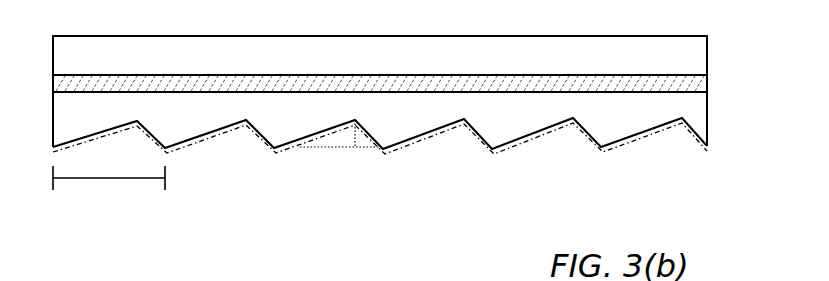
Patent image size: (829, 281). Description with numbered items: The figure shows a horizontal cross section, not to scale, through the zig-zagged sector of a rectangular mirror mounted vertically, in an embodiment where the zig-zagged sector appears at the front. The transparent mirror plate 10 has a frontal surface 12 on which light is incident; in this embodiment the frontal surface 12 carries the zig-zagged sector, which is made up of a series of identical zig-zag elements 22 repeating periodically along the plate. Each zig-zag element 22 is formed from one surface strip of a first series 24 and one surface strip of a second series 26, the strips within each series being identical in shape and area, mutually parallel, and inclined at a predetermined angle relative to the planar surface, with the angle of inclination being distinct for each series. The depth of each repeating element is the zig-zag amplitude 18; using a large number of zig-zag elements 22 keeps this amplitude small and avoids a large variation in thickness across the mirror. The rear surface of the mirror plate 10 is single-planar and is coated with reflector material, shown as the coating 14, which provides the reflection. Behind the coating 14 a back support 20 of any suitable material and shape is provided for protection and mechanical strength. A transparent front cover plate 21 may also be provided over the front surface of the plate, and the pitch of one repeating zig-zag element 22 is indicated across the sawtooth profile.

The mirror plate 10 is at (380, 91).
The frontal surface 12 is at (717, 118).
The reflector coating 14 is at (393, 84).
The zig-zag amplitude 18 is at (348, 136).
The back support 20 is at (380, 58).
The transparent front cover plate 21 is at (175, 148).
The zig-zag element 22 is at (109, 161).
The surface strips of first series 24 is at (215, 132).
The surface strips of second series 26 is at (253, 138).